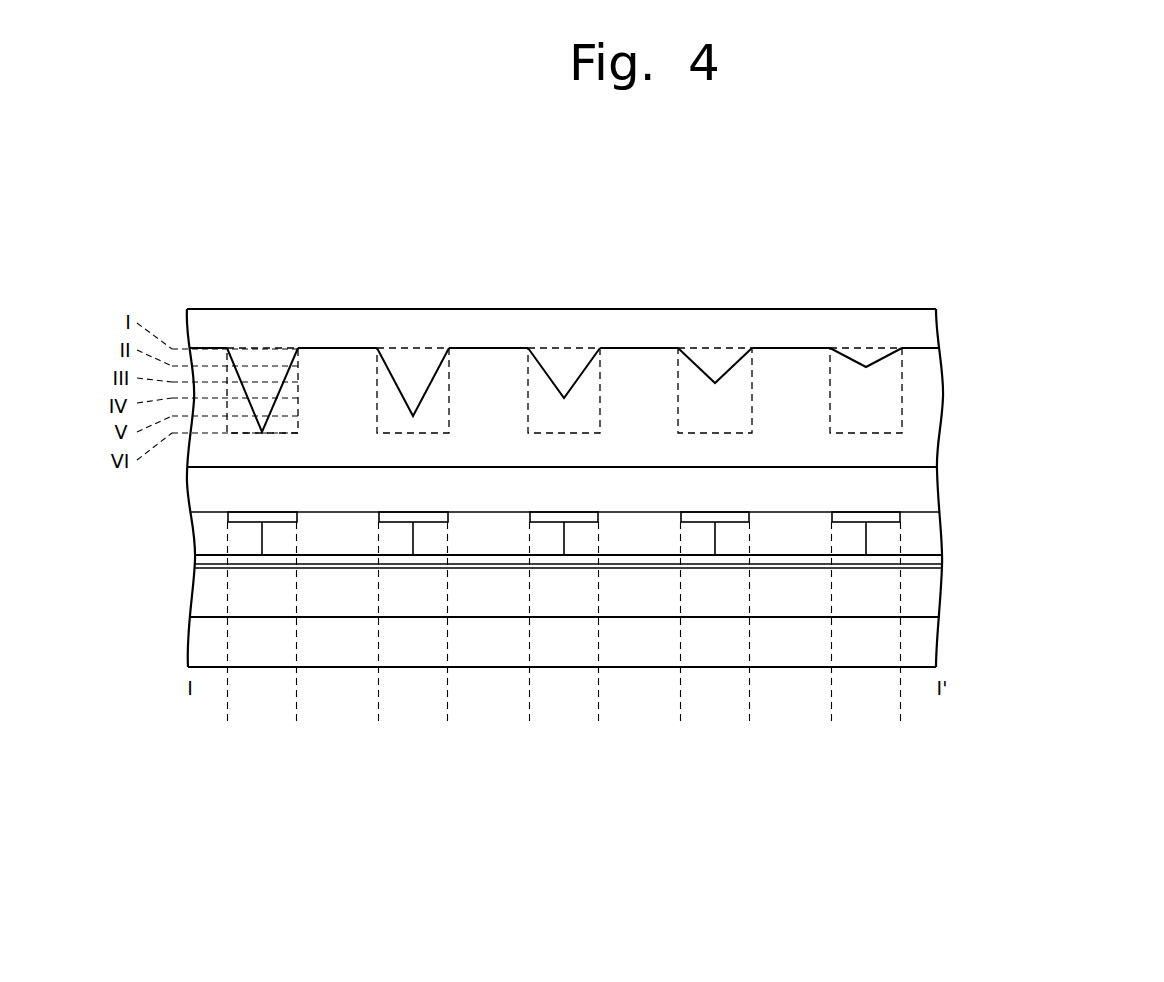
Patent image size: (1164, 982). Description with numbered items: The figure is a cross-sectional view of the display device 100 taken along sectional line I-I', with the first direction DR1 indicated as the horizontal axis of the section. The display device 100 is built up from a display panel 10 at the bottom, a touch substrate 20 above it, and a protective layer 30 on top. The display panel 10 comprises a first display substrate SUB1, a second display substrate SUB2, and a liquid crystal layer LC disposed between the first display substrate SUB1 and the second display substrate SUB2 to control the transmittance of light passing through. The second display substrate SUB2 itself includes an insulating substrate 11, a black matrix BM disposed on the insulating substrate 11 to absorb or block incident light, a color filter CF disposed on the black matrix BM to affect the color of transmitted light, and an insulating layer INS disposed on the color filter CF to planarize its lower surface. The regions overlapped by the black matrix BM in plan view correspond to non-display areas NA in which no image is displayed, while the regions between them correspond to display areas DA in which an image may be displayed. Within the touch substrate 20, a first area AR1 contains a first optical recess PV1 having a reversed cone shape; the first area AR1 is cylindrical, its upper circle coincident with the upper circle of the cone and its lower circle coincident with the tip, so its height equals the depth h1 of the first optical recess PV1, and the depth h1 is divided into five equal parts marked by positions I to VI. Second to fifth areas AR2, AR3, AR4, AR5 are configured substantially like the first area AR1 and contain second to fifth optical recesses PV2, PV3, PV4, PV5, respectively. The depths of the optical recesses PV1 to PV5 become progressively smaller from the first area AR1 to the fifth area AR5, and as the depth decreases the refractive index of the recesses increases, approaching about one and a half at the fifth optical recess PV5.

The display device 100 is at (979, 226).
The display panel 10 is at (1095, 510).
The insulating substrate 11 is at (930, 478).
The touch substrate 20 is at (933, 397).
The protective layer 30 is at (928, 328).
The black matrix BM is at (884, 516).
The color filter CF is at (930, 533).
The insulating layer INS is at (935, 560).
The liquid crystal layer LC is at (930, 597).
The first display substrate SUB1 is at (930, 645).
The second display substrate SUB2 is at (1017, 467).
The first area AR1 is at (250, 347).
The second area AR2 is at (401, 347).
The third area AR3 is at (552, 347).
The fourth area AR4 is at (703, 347).
The fifth area AR5 is at (854, 347).
The first optical recess PV1 is at (269, 354).
The second optical recess PV2 is at (420, 354).
The third optical recess PV3 is at (571, 354).
The fourth optical recess PV4 is at (722, 354).
The fifth optical recess PV5 is at (873, 354).
The depth of the first optical recess h1 is at (313, 350).
The non-display area NA is at (899, 712).
The display area DA is at (830, 712).
The first direction DR1 is at (921, 795).